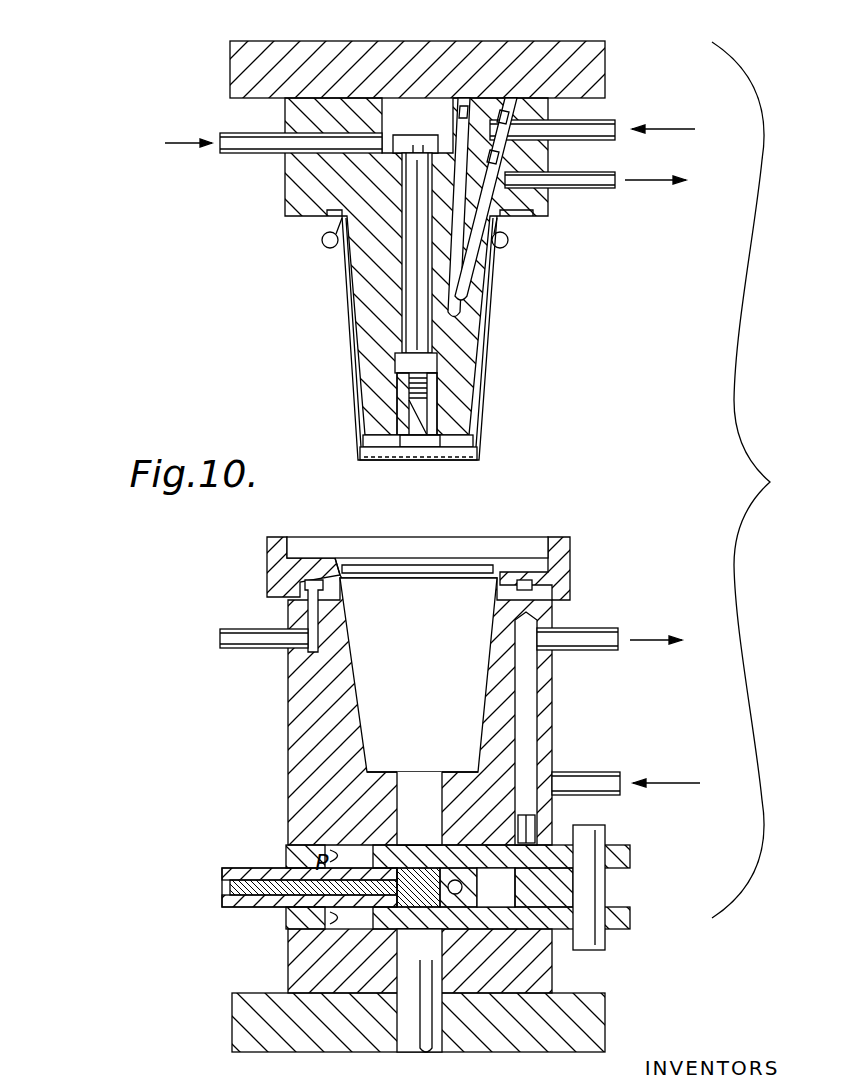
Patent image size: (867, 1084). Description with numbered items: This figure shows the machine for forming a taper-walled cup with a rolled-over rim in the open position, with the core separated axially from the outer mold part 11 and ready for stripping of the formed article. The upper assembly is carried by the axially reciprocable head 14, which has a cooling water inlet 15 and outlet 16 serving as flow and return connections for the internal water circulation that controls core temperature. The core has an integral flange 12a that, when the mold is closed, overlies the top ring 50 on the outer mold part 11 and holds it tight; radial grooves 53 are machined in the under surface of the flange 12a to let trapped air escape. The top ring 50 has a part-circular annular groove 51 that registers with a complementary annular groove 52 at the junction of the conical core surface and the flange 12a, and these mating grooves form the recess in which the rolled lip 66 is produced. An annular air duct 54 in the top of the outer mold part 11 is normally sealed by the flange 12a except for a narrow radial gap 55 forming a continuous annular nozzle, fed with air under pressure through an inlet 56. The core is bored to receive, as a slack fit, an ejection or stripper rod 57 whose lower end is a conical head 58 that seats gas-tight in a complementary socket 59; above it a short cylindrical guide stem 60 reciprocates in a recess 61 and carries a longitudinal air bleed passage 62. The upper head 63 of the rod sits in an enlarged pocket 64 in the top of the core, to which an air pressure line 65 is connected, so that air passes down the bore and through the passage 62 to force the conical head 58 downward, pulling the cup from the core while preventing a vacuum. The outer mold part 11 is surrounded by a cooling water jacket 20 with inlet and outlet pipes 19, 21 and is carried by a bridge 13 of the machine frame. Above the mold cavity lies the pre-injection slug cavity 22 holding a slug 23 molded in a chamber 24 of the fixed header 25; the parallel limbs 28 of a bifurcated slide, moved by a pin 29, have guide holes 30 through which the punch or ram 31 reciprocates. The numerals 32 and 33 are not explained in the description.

The axially reciprocable head 14 is at (236, 64).
The integral flange 12a is at (293, 199).
The grooves 53 is at (330, 216).
The air pressure line 65 is at (232, 156).
The cooling water inlet 15 is at (607, 124).
The cooling water outlet 16 is at (596, 189).
The enlarged pocket 64 is at (415, 138).
The head of stripper rod 63 is at (415, 138).
The ejection or stripper rod 57 is at (412, 298).
The recess 61 is at (398, 362).
The air bleed passage 62 is at (398, 420).
The cylindrical guide stem 60 is at (434, 412).
The socket 59 is at (472, 452).
The conical head 58 is at (403, 450).
The annular groove 52 is at (340, 232).
The rolled lip 66 is at (330, 248).
The outer mold part 11 is at (546, 720).
The top ring 50 is at (270, 590).
The annular groove 51 is at (338, 570).
The narrow radial gap 55 is at (342, 573).
The annular air duct 54 is at (525, 580).
The inlet 56 is at (240, 650).
The cooling water jacket 20 is at (529, 690).
The water outlet pipe 21 is at (586, 627).
The water inlet pipe 19 is at (588, 772).
The sprue passage 33 is at (402, 790).
The gate 32 is at (440, 785).
The parallel limbs 28 is at (290, 858).
The guide holes 30 is at (288, 856).
The pre-injection slug cavity 22 is at (417, 818).
The slug 23 is at (397, 850).
The chamber 24 is at (397, 870).
The fixed header 25 is at (240, 873).
The pin 29 is at (598, 836).
The bridge 13 is at (265, 1015).
The punch or ram 31 is at (410, 975).